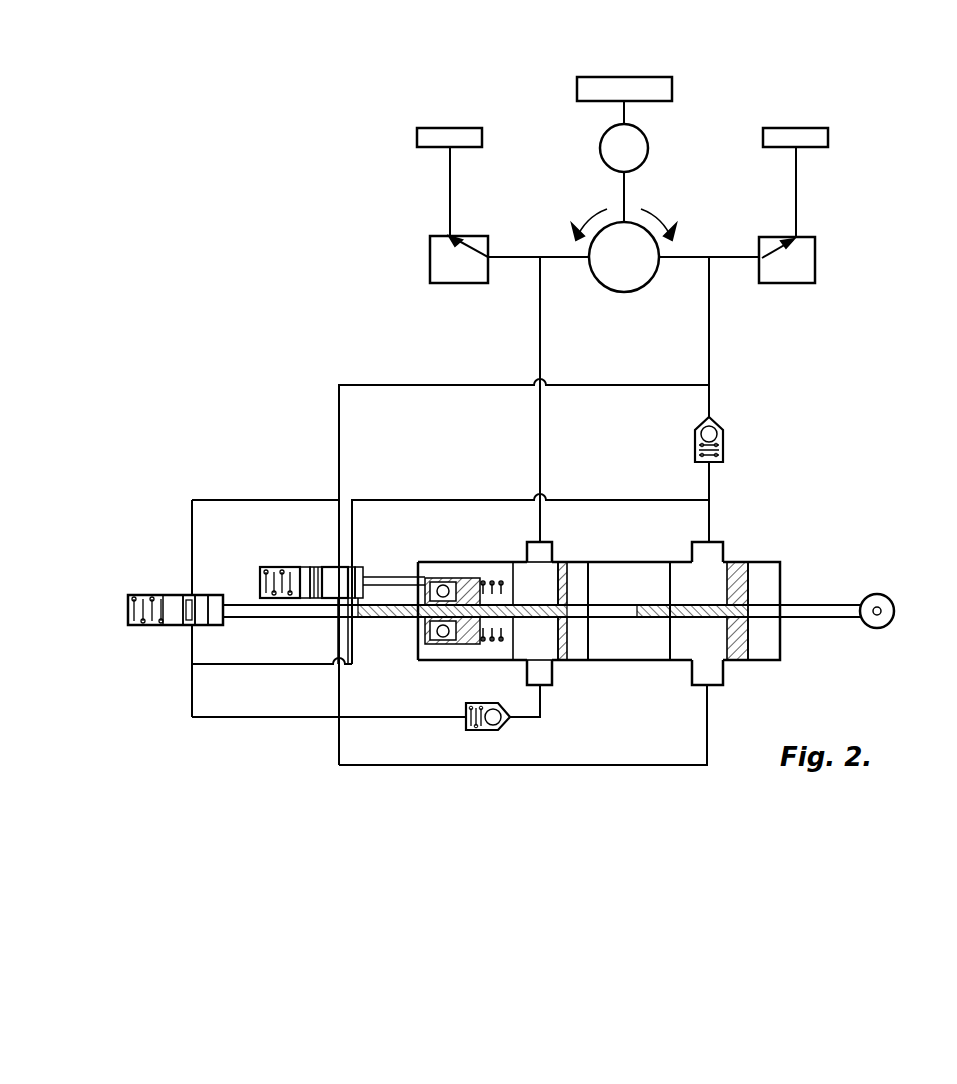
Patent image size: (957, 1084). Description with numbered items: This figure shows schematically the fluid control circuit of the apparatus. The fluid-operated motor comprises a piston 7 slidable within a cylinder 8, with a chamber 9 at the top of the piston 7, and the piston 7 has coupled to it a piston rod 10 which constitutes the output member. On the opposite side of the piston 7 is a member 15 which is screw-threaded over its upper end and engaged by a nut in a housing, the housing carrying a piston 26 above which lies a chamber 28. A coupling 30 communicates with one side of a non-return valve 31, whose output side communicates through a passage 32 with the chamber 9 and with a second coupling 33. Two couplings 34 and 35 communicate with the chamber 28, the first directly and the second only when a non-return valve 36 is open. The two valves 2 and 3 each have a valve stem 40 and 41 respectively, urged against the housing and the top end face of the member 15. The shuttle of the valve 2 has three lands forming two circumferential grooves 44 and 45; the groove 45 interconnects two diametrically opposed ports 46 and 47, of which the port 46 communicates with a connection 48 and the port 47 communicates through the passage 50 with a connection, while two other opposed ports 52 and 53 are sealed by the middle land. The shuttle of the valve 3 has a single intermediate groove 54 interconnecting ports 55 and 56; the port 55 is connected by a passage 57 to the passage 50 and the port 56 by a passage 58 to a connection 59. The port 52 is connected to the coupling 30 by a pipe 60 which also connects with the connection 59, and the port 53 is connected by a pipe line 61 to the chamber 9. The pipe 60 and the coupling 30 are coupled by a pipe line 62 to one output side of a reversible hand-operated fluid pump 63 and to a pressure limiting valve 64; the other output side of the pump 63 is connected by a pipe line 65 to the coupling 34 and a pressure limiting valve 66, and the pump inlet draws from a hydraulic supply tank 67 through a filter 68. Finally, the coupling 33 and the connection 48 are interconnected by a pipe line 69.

The valve 2 is at (246, 558).
The valve 3 is at (128, 609).
The piston 7 is at (752, 565).
The cylinder 8 is at (770, 580).
The chamber 9 is at (719, 611).
The piston rod 10 is at (800, 618).
The member 15 is at (616, 622).
The piston 26 is at (466, 577).
The chamber 28 is at (540, 611).
The coupling 30 is at (711, 393).
The non-return valve 31 is at (724, 432).
The passage 32 is at (711, 517).
The coupling 33 is at (649, 500).
The coupling 34 is at (542, 523).
The coupling 35 is at (419, 718).
The non-return valve 36 is at (506, 722).
The valve stem 40 is at (405, 577).
The valve stem 41 is at (352, 640).
The circumferential groove 44 is at (296, 556).
The circumferential groove 45 is at (380, 560).
The port 46 is at (364, 558).
The port 47 is at (356, 618).
The connection 48 is at (352, 524).
The passage 50 is at (257, 664).
The port 52 is at (320, 564).
The port 53 is at (336, 600).
The circumferential groove 54 is at (200, 628).
The port 55 is at (188, 627).
The port 56 is at (190, 595).
The passage 57 is at (268, 717).
The passage 58 is at (190, 520).
The connection 59 is at (263, 500).
The pipe 60 is at (378, 385).
The pipe line 61 is at (590, 765).
The pipe line 62 is at (711, 327).
The reversible hand-operated fluid pump 63 is at (601, 284).
The pressure limiting valve 64 is at (812, 262).
The pipe line 65 is at (538, 328).
The pressure limiting valve 66 is at (433, 257).
The hydraulic supply tank 67 is at (656, 77).
The filter 68 is at (649, 142).
The pipe line 69 is at (484, 500).